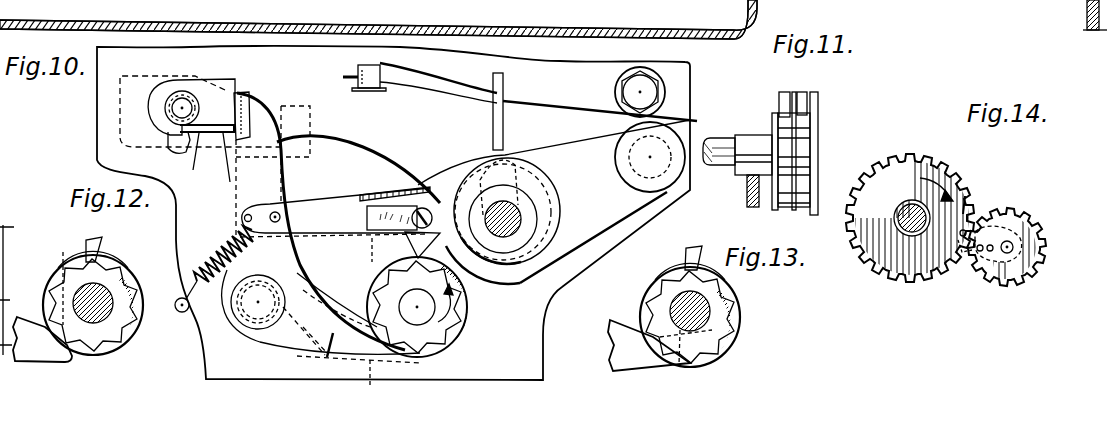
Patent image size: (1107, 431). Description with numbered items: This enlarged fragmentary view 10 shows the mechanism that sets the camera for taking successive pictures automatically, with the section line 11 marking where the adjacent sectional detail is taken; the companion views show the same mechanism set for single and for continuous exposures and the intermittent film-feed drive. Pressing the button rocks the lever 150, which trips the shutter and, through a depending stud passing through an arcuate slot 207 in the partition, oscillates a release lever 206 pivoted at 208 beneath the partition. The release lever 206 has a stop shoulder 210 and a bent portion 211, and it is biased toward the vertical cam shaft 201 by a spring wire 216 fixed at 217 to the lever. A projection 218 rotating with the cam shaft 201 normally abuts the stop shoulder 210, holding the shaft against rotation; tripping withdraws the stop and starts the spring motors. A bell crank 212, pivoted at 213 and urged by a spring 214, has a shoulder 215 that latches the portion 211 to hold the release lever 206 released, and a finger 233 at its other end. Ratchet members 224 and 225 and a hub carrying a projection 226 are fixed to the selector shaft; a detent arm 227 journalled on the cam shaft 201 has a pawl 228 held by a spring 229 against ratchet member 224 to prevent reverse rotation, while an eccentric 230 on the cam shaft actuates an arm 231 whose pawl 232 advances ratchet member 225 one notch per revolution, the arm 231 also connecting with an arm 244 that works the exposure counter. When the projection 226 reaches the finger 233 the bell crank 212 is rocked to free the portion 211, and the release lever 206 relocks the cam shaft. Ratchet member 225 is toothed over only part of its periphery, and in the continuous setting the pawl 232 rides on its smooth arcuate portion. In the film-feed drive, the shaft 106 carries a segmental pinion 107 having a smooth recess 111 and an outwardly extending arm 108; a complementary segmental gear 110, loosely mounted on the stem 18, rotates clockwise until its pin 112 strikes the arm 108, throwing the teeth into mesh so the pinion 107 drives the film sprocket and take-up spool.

In FIG. 10, the lever 150 is at (143, 82).
In FIG. 10, the arcuate slot 207 is at (168, 152).
In FIG. 10, the bent portion 211 is at (205, 132).
In FIG. 10, the bell crank 212 is at (248, 186).
In FIG. 12, the bell crank 212 is at (75, 361).
In FIG. 13, the bell crank 212 is at (649, 345).
In FIG. 10, the shoulder 215 is at (248, 100).
In FIG. 10, the release lever 206 is at (336, 130).
In FIG. 10, the spring wire fixing point 217 is at (384, 68).
In FIG. 10, the spring wire 216 is at (563, 119).
In FIG. 10, the stop shoulder 210 is at (504, 123).
In FIG. 10, the pivot 208 is at (651, 172).
In FIG. 10, the cam shaft 201 is at (520, 232).
In FIG. 10, the eccentric 230 is at (520, 200).
In FIG. 10, the projection 218 is at (497, 168).
In FIG. 10, the detent arm 227 is at (372, 195).
In FIG. 10, the arm 231 is at (328, 227).
In FIG. 10, the arm 244 is at (397, 208).
In FIG. 10, the spring 229 is at (225, 246).
In FIG. 10, the pivot 213 is at (263, 290).
In FIG. 10, the spring 214 is at (321, 322).
In FIG. 10, the ratchet member 225 is at (455, 308).
In FIG. 12, the ratchet member 225 is at (118, 322).
In FIG. 13, the ratchet member 225 is at (735, 293).
In FIG. 11, the ratchet member 225 is at (803, 138).
In FIG. 10, the ratchet member 224 is at (462, 332).
In FIG. 11, the ratchet member 224 is at (780, 130).
In FIG. 10, the projection 226 is at (388, 308).
In FIG. 12, the projection 226 is at (53, 278).
In FIG. 13, the projection 226 is at (712, 330).
In FIG. 11, the projection 226 is at (748, 165).
In FIG. 12, the pawl 232 is at (102, 243).
In FIG. 13, the pawl 232 is at (685, 255).
In FIG. 11, the pawl 232 is at (807, 103).
In FIG. 11, the pawl 228 is at (790, 88).
In FIG. 11, the finger 233 is at (756, 207).
In FIG. 10, the section line 11 is at (392, 247).
In FIG. 14, the frame 10 is at (1093, 65).
In FIG. 14, the segmental gear 110 is at (906, 285).
In FIG. 14, the stem 18 is at (913, 201).
In FIG. 14, the segmental pinion 107 is at (1002, 280).
In FIG. 14, the shaft 106 is at (1013, 247).
In FIG. 14, the smooth surfaced recess 111 is at (982, 230).
In FIG. 14, the arm 108 is at (963, 252).
In FIG. 14, the pin 112 is at (967, 202).